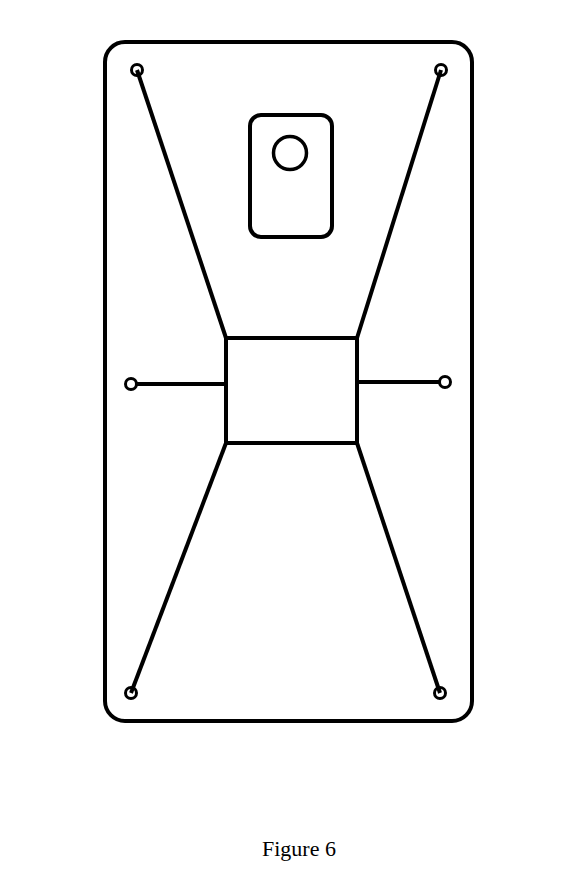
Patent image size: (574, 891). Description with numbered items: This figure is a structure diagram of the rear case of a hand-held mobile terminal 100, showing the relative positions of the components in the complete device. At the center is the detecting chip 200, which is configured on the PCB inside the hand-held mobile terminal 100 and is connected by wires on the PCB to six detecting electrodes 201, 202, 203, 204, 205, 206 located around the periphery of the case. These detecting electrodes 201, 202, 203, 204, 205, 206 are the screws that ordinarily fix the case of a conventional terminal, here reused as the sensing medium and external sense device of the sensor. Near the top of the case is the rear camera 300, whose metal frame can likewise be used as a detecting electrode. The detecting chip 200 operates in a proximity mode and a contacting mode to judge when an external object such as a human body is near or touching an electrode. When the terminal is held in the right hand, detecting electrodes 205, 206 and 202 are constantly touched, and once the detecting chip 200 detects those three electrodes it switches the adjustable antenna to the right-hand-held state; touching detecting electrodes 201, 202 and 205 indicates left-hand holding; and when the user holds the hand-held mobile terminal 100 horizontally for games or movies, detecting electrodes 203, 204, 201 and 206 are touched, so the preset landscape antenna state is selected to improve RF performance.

The hand-held mobile terminal 100 is at (283, 692).
The detecting chip 200 is at (357, 353).
The detecting electrode 201 is at (446, 693).
The detecting electrode 202 is at (451, 382).
The detecting electrode 203 is at (447, 70).
The detecting electrode 204 is at (131, 70).
The detecting electrode 205 is at (125, 384).
The detecting electrode 206 is at (125, 693).
The rear camera 300 is at (290, 115).